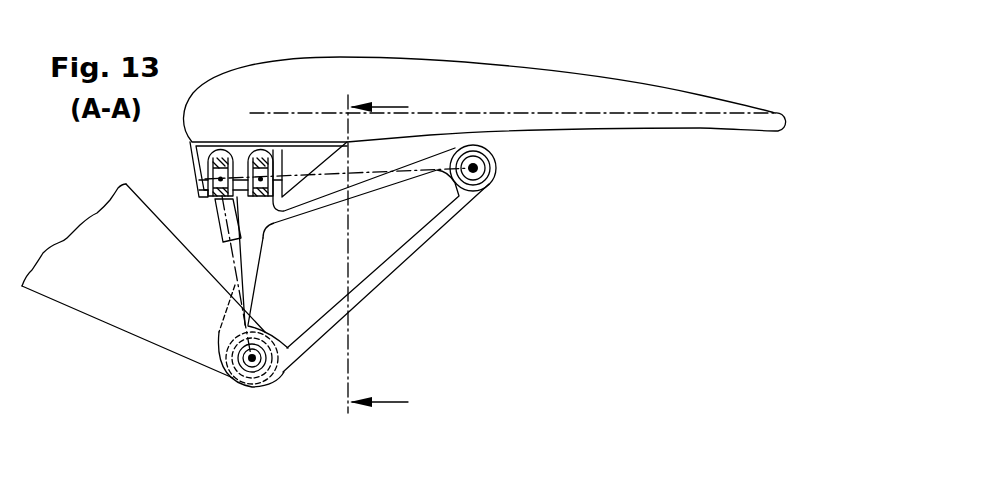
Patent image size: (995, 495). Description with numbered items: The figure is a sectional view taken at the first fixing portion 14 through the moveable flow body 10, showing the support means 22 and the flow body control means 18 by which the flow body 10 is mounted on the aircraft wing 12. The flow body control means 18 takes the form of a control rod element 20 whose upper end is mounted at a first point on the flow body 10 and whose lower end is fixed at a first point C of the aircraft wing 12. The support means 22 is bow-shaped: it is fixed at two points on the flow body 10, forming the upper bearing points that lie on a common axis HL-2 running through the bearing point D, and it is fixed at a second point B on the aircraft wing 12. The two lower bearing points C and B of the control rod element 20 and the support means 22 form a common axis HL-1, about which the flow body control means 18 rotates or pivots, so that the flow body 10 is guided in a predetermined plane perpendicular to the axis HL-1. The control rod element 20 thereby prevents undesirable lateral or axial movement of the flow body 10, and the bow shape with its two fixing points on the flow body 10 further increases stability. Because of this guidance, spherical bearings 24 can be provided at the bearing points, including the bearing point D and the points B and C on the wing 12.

The moveable flow body 10 is at (433, 87).
The aircraft wing 12 is at (147, 242).
The first fixing portion 14 is at (221, 387).
The flow body control means 18 is at (210, 222).
The control rod element 20 is at (250, 222).
The support means 22 is at (320, 283).
The spherical bearing 24 is at (215, 136).
The common axis HL-1 is at (258, 374).
The common axis HL-2 is at (360, 188).
The bearing point D is at (474, 162).
The second point B is at (378, 244).
The first point C is at (251, 362).